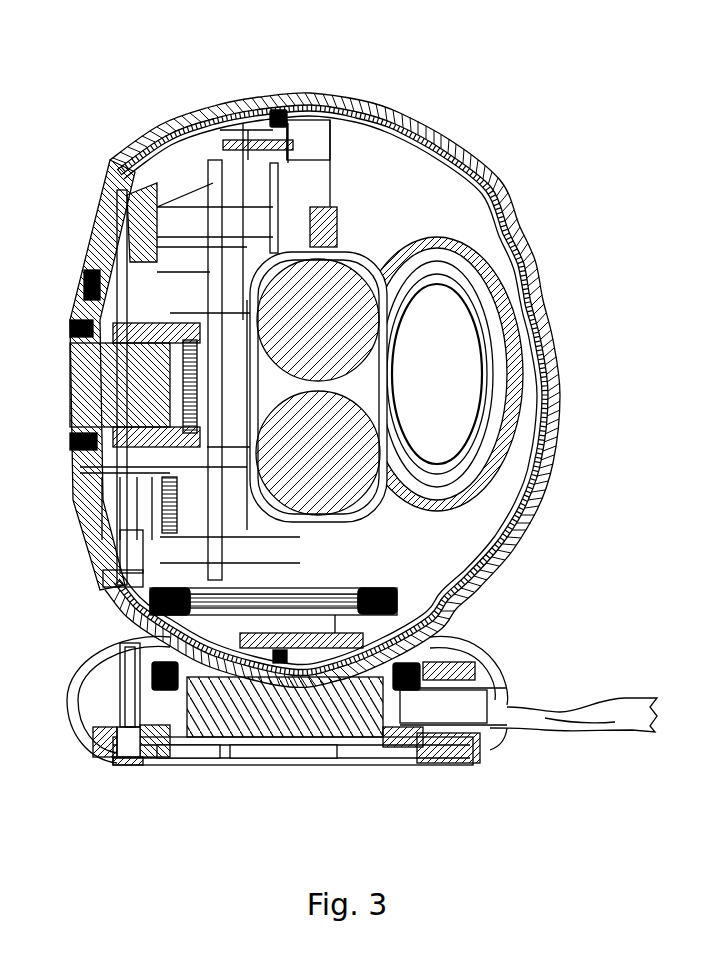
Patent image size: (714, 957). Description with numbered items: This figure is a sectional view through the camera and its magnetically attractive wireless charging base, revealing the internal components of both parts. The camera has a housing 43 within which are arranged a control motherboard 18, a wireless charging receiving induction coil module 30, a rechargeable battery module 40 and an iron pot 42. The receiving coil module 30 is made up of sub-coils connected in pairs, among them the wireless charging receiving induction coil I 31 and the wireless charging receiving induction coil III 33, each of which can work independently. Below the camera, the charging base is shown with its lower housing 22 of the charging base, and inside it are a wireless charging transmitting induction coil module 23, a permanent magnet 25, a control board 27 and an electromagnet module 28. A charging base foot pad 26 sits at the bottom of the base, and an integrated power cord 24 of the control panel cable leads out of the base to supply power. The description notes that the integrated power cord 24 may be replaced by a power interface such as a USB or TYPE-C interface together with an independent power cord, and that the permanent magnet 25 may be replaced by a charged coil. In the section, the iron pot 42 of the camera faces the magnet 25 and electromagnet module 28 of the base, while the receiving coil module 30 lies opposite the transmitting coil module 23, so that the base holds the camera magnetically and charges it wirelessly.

The control motherboard 18 is at (213, 160).
The housing 43 is at (487, 195).
The wireless charging receiving induction coil I 31 is at (450, 274).
The rechargeable battery module 40 is at (330, 337).
The wireless charging receiving induction coil module 30 is at (400, 597).
The iron pot 42 is at (505, 517).
The wireless charging receiving induction coil III 33 is at (400, 602).
The electromagnet module 28 is at (497, 663).
The integrated power cord 24 is at (550, 722).
The charging base foot pad 26 is at (128, 762).
The wireless charging transmitting induction coil module 23 is at (175, 745).
The permanent magnet 25 is at (277, 705).
The lower housing of the charging base 22 is at (437, 758).
The control board 27 is at (480, 718).